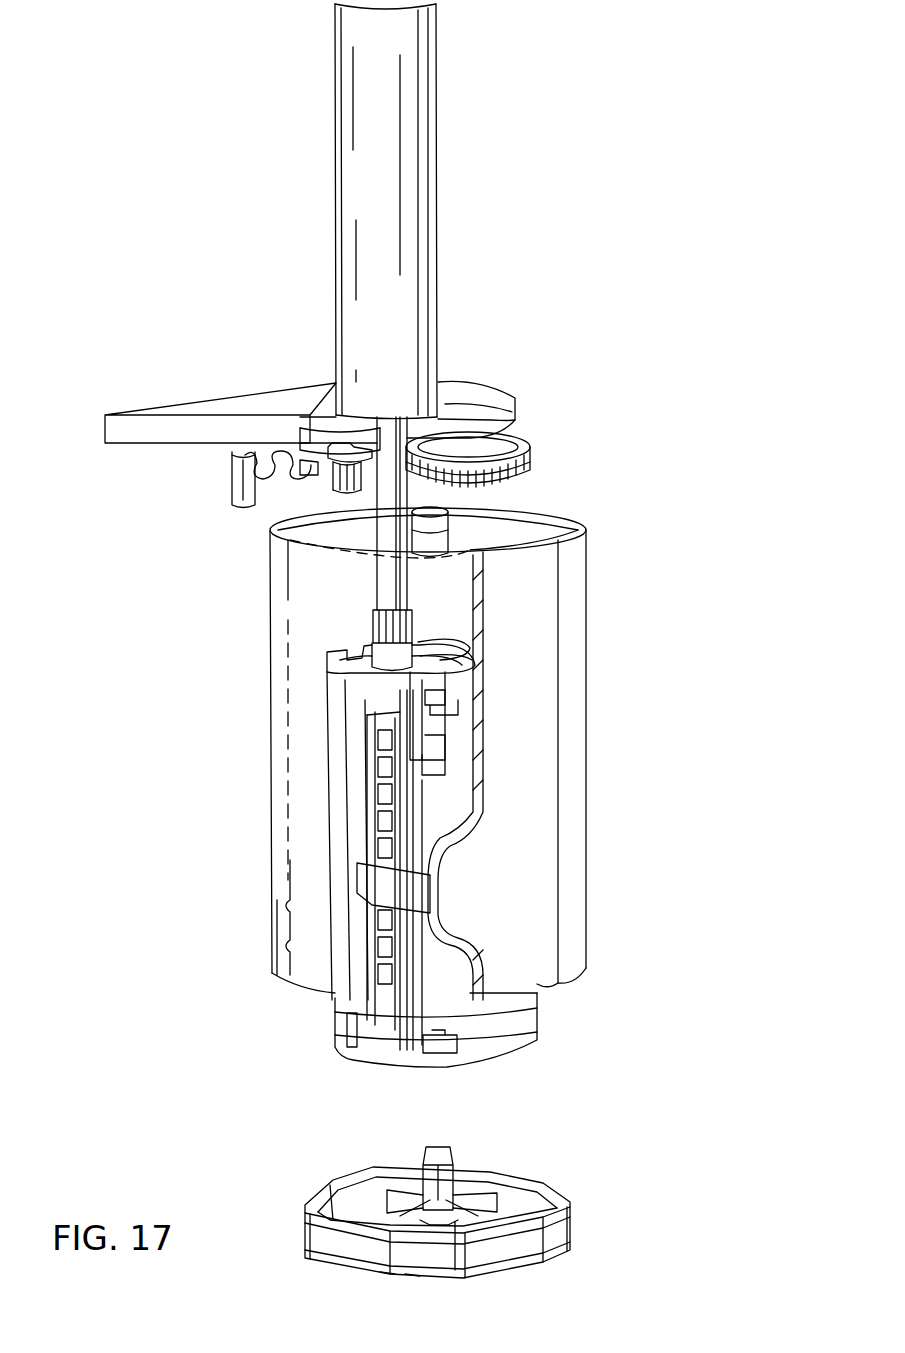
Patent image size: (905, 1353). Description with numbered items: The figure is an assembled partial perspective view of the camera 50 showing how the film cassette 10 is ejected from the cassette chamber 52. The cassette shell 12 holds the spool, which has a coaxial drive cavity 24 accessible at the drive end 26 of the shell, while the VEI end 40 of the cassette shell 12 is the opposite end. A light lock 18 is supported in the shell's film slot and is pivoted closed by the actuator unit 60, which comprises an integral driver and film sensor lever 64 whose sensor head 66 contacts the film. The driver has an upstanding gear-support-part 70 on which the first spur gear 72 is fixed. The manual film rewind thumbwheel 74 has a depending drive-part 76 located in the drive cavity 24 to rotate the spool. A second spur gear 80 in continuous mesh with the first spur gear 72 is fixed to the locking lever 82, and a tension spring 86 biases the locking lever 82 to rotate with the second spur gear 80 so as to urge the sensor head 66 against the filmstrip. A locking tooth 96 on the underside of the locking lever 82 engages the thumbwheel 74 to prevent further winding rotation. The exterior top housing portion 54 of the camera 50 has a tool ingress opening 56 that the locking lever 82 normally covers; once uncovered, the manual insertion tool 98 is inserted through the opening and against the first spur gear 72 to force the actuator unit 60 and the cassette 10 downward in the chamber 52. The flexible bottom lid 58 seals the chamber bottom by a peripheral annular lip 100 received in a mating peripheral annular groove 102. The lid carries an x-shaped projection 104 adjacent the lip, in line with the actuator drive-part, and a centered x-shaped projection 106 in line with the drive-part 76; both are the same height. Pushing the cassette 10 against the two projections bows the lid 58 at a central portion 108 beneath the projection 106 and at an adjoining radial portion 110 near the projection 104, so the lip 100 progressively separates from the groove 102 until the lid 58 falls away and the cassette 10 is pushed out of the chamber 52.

The film cassette 10 is at (448, 822).
The cassette shell 12 is at (470, 830).
The light lock 18 is at (375, 815).
The drive cavity 24 is at (460, 651).
The drive end 26 is at (455, 641).
The VEI end 40 is at (368, 1057).
The camera 50 is at (550, 402).
The cassette chamber 52 is at (290, 960).
The top housing portion 54 is at (332, 390).
The tool ingress opening 56 is at (402, 424).
The bottom lid 58 is at (572, 1229).
The actuator unit 60 is at (362, 652).
The film sensor lever 64 is at (445, 735).
The sensor head 66 is at (435, 758).
The gear-support-part 70 is at (450, 695).
The first spur gear 72 is at (410, 630).
The film rewind thumbwheel 74 is at (532, 455).
The drive-part 76 is at (450, 548).
The second spur gear 80 is at (335, 484).
The locking lever 82 is at (340, 440).
The tension spring 86 is at (248, 476).
The locking tooth 96 is at (300, 430).
The manual insertion tool 98 is at (425, 195).
The peripheral annular lip 100 is at (305, 1225).
The peripheral annular groove 102 is at (290, 918).
The x-shaped projection 104 is at (455, 1225).
The x-shaped projection 106 is at (405, 1185).
The central portion 108 is at (390, 1277).
The radial portion 110 is at (415, 1283).